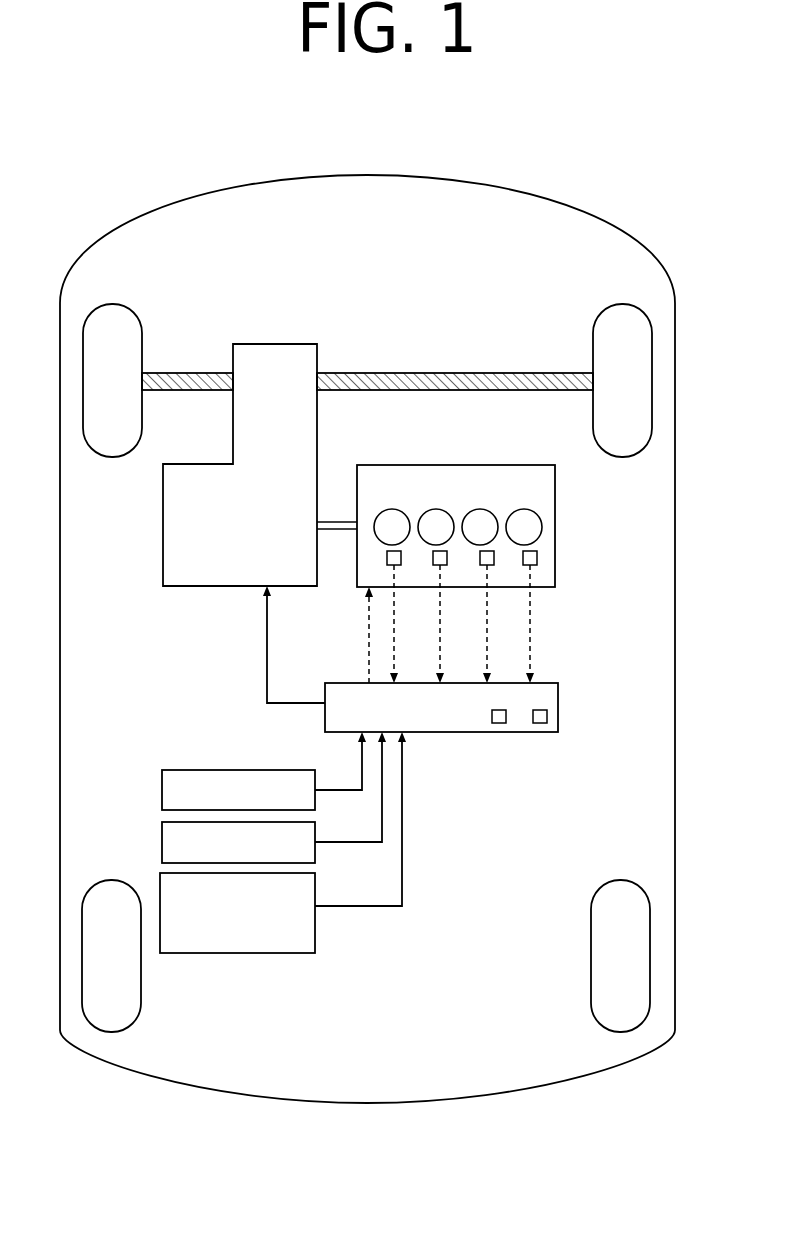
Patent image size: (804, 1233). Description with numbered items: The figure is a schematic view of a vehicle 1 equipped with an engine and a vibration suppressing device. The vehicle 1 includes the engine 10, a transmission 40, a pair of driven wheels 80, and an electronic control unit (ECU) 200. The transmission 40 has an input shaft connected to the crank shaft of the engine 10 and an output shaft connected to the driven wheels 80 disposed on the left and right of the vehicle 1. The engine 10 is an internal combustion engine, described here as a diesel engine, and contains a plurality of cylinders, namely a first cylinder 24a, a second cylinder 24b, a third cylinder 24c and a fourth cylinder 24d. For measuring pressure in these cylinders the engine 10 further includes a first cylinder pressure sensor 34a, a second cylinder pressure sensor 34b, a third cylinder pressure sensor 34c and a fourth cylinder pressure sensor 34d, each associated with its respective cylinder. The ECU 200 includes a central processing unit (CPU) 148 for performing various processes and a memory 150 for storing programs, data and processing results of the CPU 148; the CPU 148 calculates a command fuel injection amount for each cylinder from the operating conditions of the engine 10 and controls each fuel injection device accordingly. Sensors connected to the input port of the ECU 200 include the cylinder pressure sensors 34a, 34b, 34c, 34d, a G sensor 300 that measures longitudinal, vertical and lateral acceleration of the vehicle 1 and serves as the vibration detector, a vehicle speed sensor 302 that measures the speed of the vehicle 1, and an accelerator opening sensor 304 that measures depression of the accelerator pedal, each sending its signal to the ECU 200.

The vehicle 1 is at (358, 148).
The driven wheels 80 is at (604, 311).
The transmission 40 is at (163, 527).
The engine 10 is at (538, 465).
The first cylinder 24a is at (374, 524).
The second cylinder 24b is at (449, 514).
The third cylinder 24c is at (482, 510).
The fourth cylinder 24d is at (543, 528).
The first cylinder pressure sensor 34a is at (387, 558).
The second cylinder pressure sensor 34b is at (433, 560).
The third cylinder pressure sensor 34c is at (480, 560).
The fourth cylinder pressure sensor 34d is at (538, 558).
The electronic control unit 200 is at (558, 695).
The central processing unit 148 is at (499, 724).
The memory 150 is at (540, 724).
The G sensor 300 is at (162, 790).
The vehicle speed sensor 302 is at (162, 840).
The accelerator opening sensor 304 is at (243, 953).